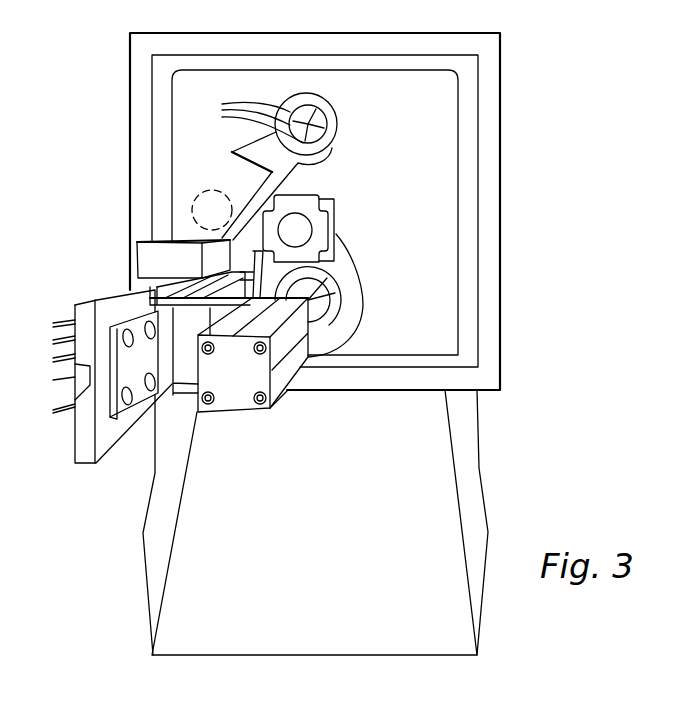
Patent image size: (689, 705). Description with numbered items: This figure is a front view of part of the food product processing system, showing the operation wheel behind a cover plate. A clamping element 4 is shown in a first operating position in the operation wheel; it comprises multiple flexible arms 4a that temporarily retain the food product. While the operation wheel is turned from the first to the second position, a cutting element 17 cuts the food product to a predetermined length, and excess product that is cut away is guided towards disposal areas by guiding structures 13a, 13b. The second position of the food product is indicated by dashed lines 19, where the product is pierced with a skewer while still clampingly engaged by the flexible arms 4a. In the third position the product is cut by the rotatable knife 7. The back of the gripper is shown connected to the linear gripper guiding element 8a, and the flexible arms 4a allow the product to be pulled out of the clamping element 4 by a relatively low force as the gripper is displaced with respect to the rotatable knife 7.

The clamping element 4 is at (352, 125).
The flexible arms 4a is at (249, 121).
The cutting element 17 is at (250, 161).
The dashed lines 19 is at (190, 205).
The guiding structure 13b is at (148, 257).
The linear gripper guiding element 8a is at (119, 299).
The rotatable knife 7 is at (322, 300).
The guiding structure 13a is at (173, 562).